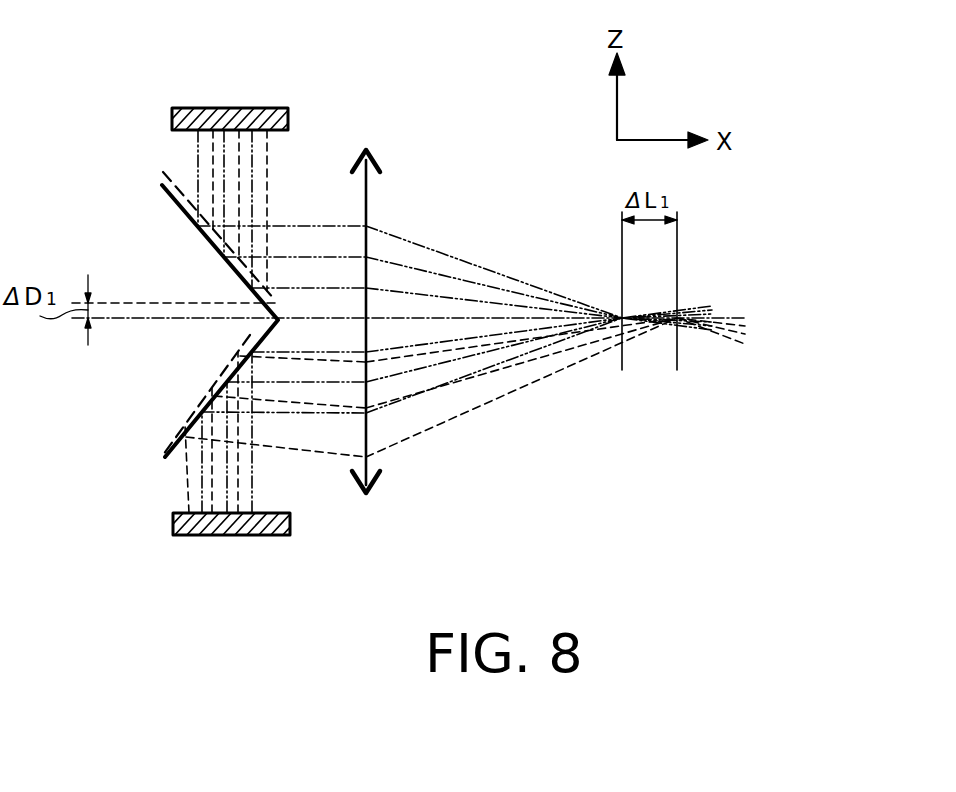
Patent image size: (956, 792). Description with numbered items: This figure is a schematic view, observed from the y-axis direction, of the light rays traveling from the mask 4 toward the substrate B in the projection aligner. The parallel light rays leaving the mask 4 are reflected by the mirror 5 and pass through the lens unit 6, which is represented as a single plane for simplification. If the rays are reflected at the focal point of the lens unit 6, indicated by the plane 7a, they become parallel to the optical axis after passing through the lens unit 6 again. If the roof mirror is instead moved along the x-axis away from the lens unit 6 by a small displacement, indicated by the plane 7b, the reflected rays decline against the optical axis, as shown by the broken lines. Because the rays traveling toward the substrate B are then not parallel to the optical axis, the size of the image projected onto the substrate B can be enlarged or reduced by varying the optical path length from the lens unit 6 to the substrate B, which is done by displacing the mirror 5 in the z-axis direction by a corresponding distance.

The mask 4 is at (245, 108).
The mirror 5 is at (184, 207).
The lens unit 6 is at (372, 160).
The plane 7a is at (622, 370).
The plane 7b is at (677, 370).
The substrate B is at (258, 535).